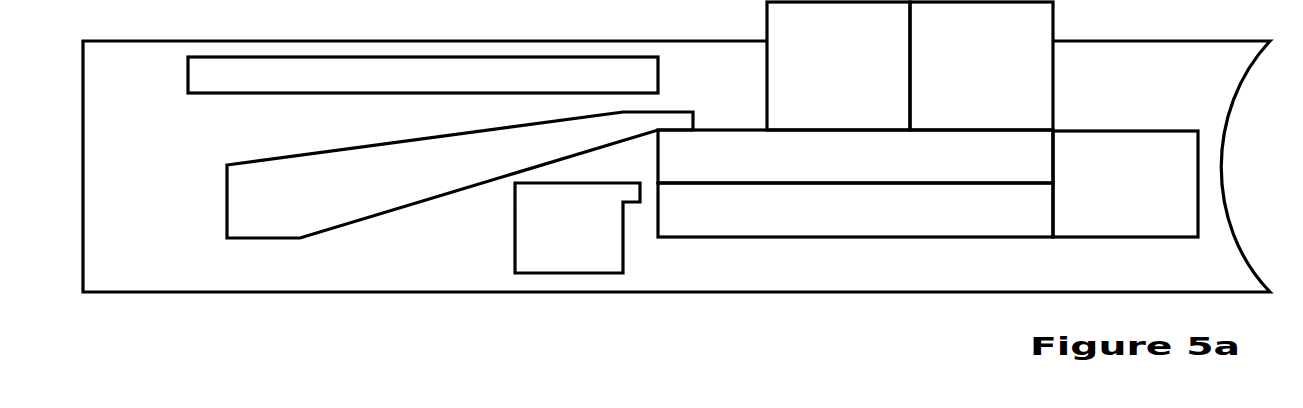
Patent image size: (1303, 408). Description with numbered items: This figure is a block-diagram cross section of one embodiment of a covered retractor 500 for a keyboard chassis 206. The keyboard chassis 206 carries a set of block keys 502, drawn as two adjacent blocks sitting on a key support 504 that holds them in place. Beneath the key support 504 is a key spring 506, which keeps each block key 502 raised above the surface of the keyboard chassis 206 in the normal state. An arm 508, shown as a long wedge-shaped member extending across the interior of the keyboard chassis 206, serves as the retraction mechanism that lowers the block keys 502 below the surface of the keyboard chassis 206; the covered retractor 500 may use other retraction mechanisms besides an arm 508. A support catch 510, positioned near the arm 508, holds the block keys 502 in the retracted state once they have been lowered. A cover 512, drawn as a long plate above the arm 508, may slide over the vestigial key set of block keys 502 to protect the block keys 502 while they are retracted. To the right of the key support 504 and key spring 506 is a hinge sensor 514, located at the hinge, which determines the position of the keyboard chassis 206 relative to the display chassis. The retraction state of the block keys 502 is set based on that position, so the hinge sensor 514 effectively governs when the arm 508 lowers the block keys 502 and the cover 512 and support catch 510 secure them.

The covered retractor 500 is at (676, 190).
The keyboard chassis 206 is at (430, 281).
The block key 502 is at (1035, 119).
The key support 504 is at (982, 169).
The key spring 506 is at (968, 222).
The arm 508 is at (418, 205).
The support catch 510 is at (592, 259).
The cover 512 is at (500, 87).
The hinge sensor 514 is at (1150, 214).